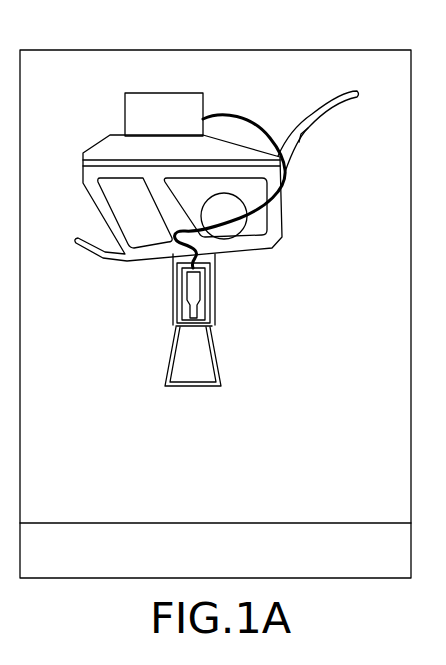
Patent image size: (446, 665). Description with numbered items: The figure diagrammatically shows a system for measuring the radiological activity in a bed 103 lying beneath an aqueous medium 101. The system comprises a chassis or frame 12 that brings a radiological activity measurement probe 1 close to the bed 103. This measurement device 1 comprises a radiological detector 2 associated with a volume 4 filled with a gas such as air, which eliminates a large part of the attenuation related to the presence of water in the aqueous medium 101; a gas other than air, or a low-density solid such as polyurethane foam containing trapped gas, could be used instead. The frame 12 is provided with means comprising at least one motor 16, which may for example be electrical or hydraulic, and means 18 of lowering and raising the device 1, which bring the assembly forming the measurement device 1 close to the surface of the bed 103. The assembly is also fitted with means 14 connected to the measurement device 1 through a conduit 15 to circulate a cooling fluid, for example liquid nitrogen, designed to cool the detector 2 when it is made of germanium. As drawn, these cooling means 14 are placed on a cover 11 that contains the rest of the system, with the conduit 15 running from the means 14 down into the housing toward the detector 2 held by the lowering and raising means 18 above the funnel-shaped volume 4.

The radiological activity measurement probe 1 is at (168, 332).
The radiological detector 2 is at (195, 312).
The volume 4 is at (192, 387).
The cover 11 is at (107, 143).
The frame 12 is at (273, 204).
The means to circulate a cooling fluid 14 is at (163, 105).
The conduit 15 is at (236, 113).
The motor 16 is at (226, 240).
The means of lowering and raising the device 18 is at (172, 277).
The aqueous medium 101 is at (95, 440).
The bed 103 is at (243, 560).